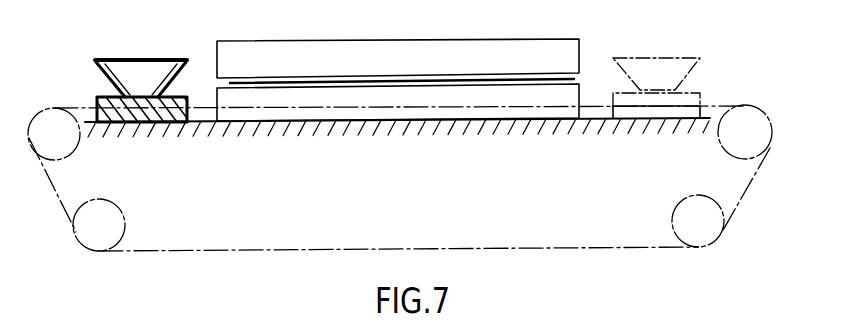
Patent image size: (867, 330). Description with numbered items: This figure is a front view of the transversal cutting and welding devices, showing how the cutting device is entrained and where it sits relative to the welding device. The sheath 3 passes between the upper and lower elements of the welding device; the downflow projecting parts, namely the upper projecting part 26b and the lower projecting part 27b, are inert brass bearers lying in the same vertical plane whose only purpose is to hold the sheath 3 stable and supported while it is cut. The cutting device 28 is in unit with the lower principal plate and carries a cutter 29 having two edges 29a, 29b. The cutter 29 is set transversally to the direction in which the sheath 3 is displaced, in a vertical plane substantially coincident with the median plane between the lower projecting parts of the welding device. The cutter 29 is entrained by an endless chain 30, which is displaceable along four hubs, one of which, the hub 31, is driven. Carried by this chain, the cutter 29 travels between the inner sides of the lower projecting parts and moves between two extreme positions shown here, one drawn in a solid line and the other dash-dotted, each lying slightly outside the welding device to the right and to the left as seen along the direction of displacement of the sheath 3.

The sheath 3 is at (345, 78).
The upper projecting part 26b is at (430, 58).
The lower projecting part 27b is at (483, 93).
The cutting device 28 is at (688, 98).
The cutter 29 is at (653, 68).
The cutter edge 29a is at (117, 71).
The cutter edge 29b is at (170, 70).
The endless chain 30 is at (399, 179).
The hub 31 is at (93, 213).